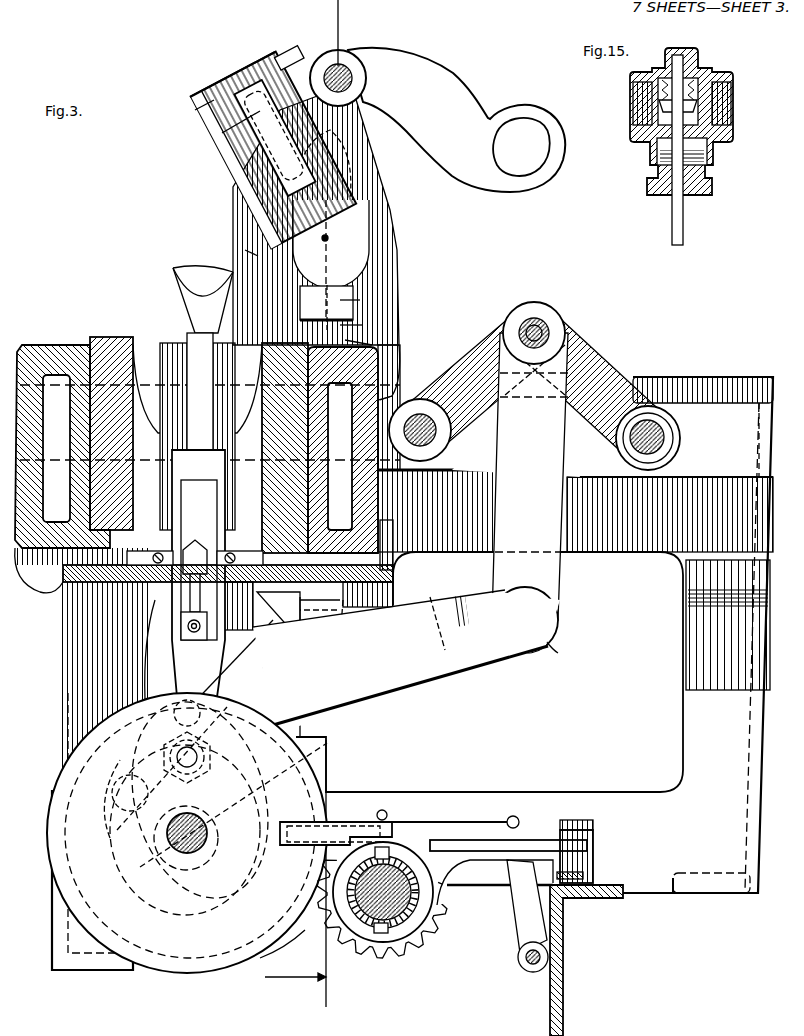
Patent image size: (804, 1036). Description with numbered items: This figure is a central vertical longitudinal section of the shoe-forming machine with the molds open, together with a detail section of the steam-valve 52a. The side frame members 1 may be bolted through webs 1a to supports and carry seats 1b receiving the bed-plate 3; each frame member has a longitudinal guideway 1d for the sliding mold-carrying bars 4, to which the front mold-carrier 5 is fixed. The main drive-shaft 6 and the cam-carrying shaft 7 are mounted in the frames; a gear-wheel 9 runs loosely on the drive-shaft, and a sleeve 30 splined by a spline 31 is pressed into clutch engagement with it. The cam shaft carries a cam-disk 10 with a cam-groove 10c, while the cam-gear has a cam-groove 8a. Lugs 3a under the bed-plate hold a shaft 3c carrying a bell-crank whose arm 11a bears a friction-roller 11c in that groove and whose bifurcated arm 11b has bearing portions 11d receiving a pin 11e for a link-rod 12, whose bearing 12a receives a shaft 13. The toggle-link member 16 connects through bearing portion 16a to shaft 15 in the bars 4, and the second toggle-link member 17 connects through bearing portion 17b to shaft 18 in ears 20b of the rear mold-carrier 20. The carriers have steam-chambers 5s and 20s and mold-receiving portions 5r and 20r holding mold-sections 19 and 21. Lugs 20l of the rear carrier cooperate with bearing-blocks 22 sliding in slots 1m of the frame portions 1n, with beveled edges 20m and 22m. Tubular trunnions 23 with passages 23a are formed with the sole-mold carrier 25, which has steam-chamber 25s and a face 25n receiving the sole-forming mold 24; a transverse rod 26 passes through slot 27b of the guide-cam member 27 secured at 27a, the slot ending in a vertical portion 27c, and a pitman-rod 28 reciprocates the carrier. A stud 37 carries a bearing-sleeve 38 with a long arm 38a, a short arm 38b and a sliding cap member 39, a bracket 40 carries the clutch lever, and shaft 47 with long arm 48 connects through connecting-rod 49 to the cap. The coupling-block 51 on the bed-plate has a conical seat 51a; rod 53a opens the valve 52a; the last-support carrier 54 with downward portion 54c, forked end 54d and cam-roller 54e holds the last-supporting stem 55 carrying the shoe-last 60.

In FIG. 3, the side frame member 1 is at (394, 539).
In FIG. 3, the web 1a is at (100, 971).
In FIG. 3, the seat 1b is at (118, 562).
In FIG. 3, the longitudinal guideway 1d is at (745, 440).
In FIG. 3, the elongated slot 1m is at (345, 342).
In FIG. 3, the vertically-extended portion 1n is at (368, 172).
In FIG. 3, the bed-plate 3 is at (118, 583).
In FIG. 3, the lug 3a is at (300, 616).
In FIG. 3, the shaft 3c is at (321, 667).
In FIG. 3, the mold-carrying bar 4 is at (516, 448).
In FIG. 3, the front mold-carrier 5 is at (40, 358).
In FIG. 3, the mold-receiving portion 5r is at (39, 572).
In FIG. 3, the steam-chamber 5s is at (52, 392).
In FIG. 3, the main drive-shaft 6 is at (393, 870).
In FIG. 3, the cam-carrying shaft 7 is at (207, 837).
In FIG. 3, the cam-groove 8a is at (272, 922).
In FIG. 3, the gear-wheel 9 is at (355, 945).
In FIG. 3, the cam-disk 10 is at (206, 830).
In FIG. 3, the cam-groove 10c is at (328, 752).
In FIG. 3, the arm 11a is at (290, 712).
In FIG. 3, the arm 11b is at (445, 655).
In FIG. 3, the friction-roller 11c is at (112, 832).
In FIG. 3, the bearing portion 11d is at (540, 643).
In FIG. 3, the pin 11e is at (530, 621).
In FIG. 3, the link-rod 12 is at (608, 916).
In FIG. 3, the bearing 12a is at (537, 312).
In FIG. 3, the shaft 13 is at (548, 336).
In FIG. 3, the shaft 15 is at (636, 446).
In FIG. 3, the toggle-link member 16 is at (612, 378).
In FIG. 3, the bearing portion 16a is at (632, 437).
In FIG. 3, the toggle-link member 17 is at (476, 347).
In FIG. 3, the bearing portion 17b is at (432, 452).
In FIG. 3, the shaft 18 is at (423, 425).
In FIG. 3, the mold-section 19 is at (106, 348).
In FIG. 3, the rear mold-carrier 20 is at (385, 356).
In FIG. 3, the ear 20b is at (380, 462).
In FIG. 3, the lug 20l is at (350, 326).
In FIG. 3, the beveled edge 20m is at (350, 300).
In FIG. 3, the mold-receiving portion 20r is at (330, 450).
In FIG. 3, the steam-chamber 20s is at (392, 380).
In FIG. 3, the mold-section 21 is at (276, 448).
In FIG. 3, the bearing-block 22 is at (356, 270).
In FIG. 3, the beveled edge 22m is at (324, 330).
In FIG. 3, the trunnion 23 is at (350, 228).
In FIG. 3, the passage 23a is at (367, 238).
In FIG. 3, the sole-forming mold 24 is at (235, 145).
In FIG. 3, the sole-mold carrier 25 is at (247, 72).
In FIG. 3, the cover plate edge 25n is at (218, 95).
In FIG. 3, the steam-chamber 25s is at (205, 112).
In FIG. 3, the transverse rod 26 is at (345, 72).
In FIG. 3, the guide-cam member 27 is at (474, 112).
In FIG. 3, the securing point 27a is at (300, 50).
In FIG. 3, the slot 27b is at (451, 129).
In FIG. 3, the slot portion 27c is at (552, 137).
In FIG. 3, the pitman-rod 28 is at (226, 644).
In FIG. 3, the sleeve 30 is at (395, 862).
In FIG. 3, the spline 31 is at (384, 847).
In FIG. 3, the stud 37 is at (573, 819).
In FIG. 3, the bearing-sleeve 38 is at (594, 853).
In FIG. 3, the long arm 38a is at (520, 839).
In FIG. 3, the short arm 38b is at (584, 875).
In FIG. 3, the cap member 39 is at (334, 822).
In FIG. 3, the bracket 40 is at (563, 1000).
In FIG. 3, the shaft 47 is at (526, 965).
In FIG. 3, the long arm 48 is at (519, 900).
In FIG. 3, the connecting-rod 49 is at (462, 821).
In FIG. 3, the coupling-block 51 is at (162, 566).
In FIG. 3, the conical seat 51a is at (193, 548).
In FIG. 15, the valve 52a is at (708, 72).
In FIG. 15, the rod 53a is at (684, 220).
In FIG. 3, the last-support carrier 54 is at (218, 631).
In FIG. 3, the downwardly-projecting portion 54c is at (194, 738).
In FIG. 3, the forked end 54d is at (208, 823).
In FIG. 3, the cam-roller 54e is at (205, 695).
In FIG. 3, the last-supporting stem 55 is at (192, 357).
In FIG. 3, the shoe-last 60 is at (190, 276).